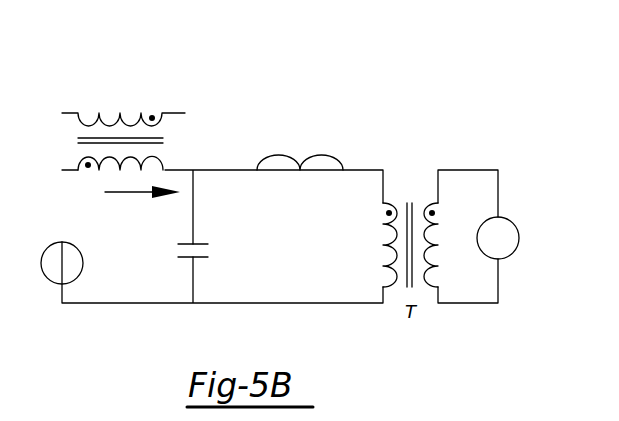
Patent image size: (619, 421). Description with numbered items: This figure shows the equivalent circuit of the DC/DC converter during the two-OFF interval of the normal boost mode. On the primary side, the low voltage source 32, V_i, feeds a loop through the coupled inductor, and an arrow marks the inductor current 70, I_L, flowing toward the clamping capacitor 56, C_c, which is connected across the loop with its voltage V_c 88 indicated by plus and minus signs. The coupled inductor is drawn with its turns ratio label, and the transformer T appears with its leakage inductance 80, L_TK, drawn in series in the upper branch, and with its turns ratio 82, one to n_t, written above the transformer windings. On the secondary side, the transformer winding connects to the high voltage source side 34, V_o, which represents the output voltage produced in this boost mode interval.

The inductor current 70 is at (130, 205).
The transformer turns ratio 82 is at (193, 128).
The transformer leakage inductance 80 is at (278, 185).
The low voltage source 32 is at (98, 280).
The clamping capacitor 56 is at (157, 265).
The clamping capacitor voltage 88 is at (252, 250).
The high voltage source side 34 is at (540, 248).